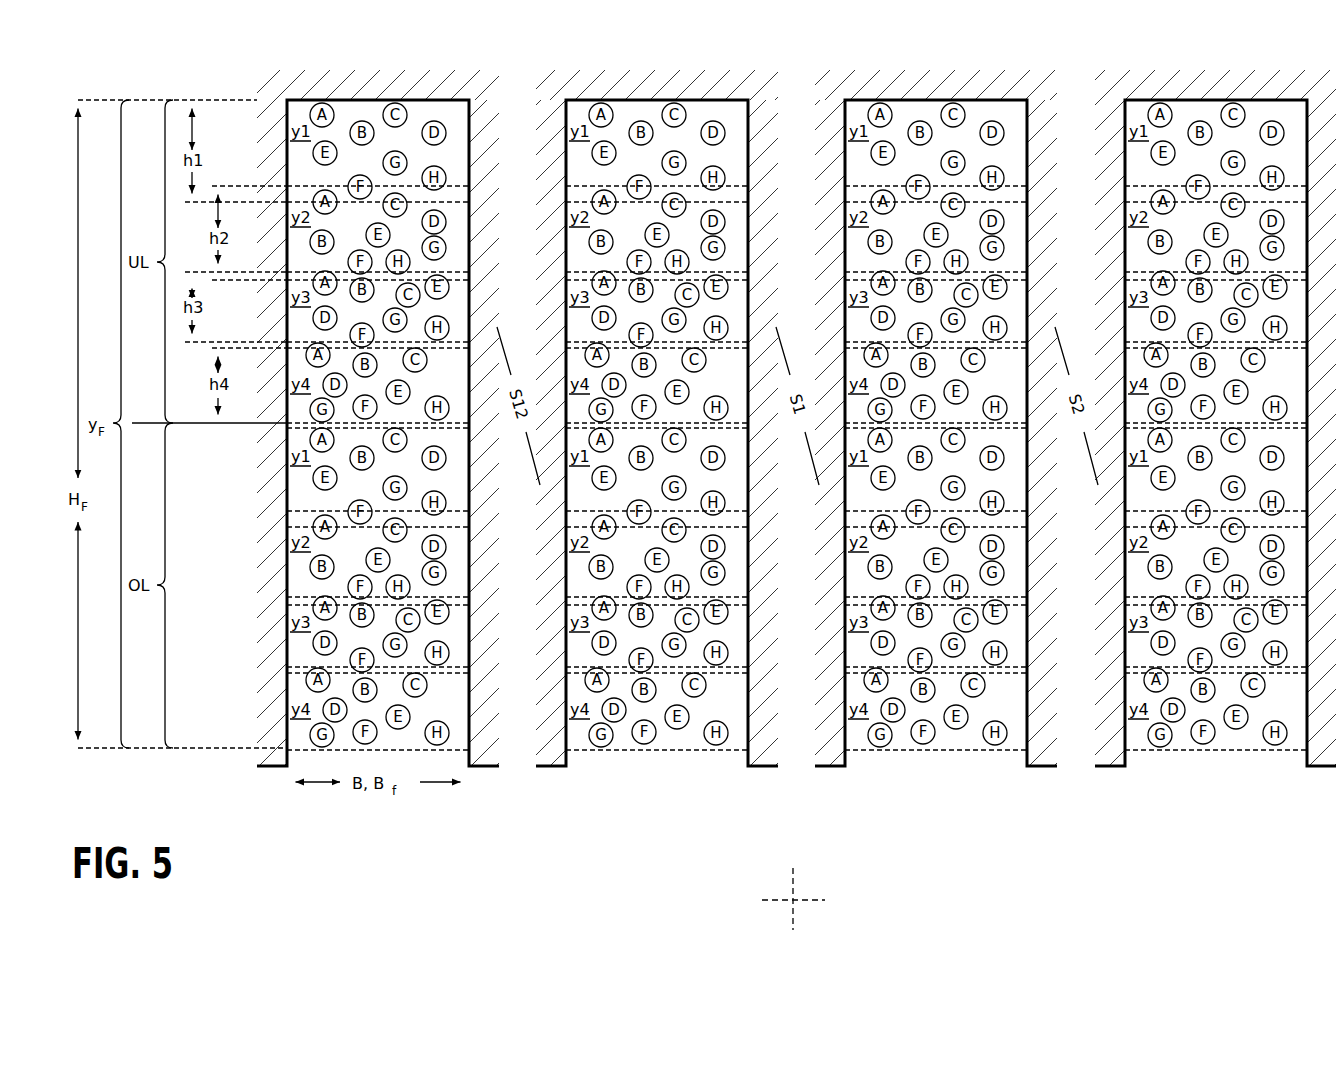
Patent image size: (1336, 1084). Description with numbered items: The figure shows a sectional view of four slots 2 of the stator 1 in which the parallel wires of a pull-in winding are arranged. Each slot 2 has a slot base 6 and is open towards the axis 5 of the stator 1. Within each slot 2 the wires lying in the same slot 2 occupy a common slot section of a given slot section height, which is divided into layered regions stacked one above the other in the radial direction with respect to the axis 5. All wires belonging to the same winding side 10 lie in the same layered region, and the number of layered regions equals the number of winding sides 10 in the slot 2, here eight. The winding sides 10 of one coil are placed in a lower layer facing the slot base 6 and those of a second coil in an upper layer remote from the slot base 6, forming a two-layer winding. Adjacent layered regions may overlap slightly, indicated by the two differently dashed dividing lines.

The stator 1 is at (778, 510).
The slot 2 is at (386, 850).
The axis 5 is at (795, 898).
The slot base 6 is at (347, 100).
The winding side 10 is at (270, 141).